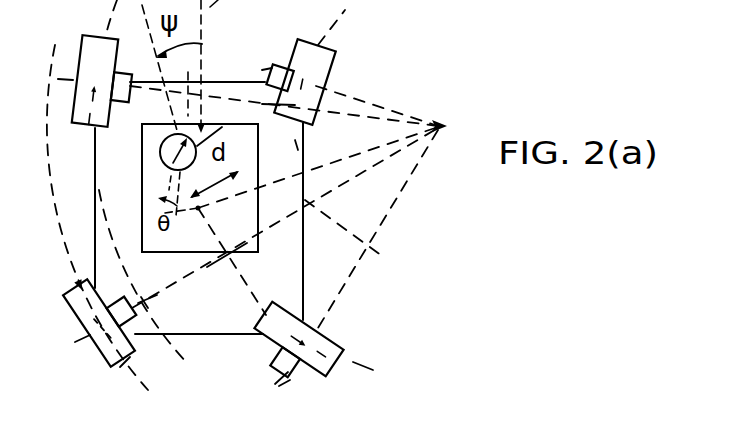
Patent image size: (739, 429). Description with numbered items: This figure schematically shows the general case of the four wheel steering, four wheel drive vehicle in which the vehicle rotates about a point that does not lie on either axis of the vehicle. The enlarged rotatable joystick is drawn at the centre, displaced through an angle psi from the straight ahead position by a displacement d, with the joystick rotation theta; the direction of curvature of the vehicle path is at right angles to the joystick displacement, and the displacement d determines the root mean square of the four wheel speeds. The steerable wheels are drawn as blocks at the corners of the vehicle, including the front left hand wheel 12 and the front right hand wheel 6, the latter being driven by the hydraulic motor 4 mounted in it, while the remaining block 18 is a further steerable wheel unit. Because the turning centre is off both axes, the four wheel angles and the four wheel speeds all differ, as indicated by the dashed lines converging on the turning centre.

The steerable front left hand wheel 12 is at (104, 82).
The steerable front right hand wheel 6 is at (297, 79).
The third transmitter unit 18 is at (110, 317).
The hydraulic motor 4 is at (292, 348).